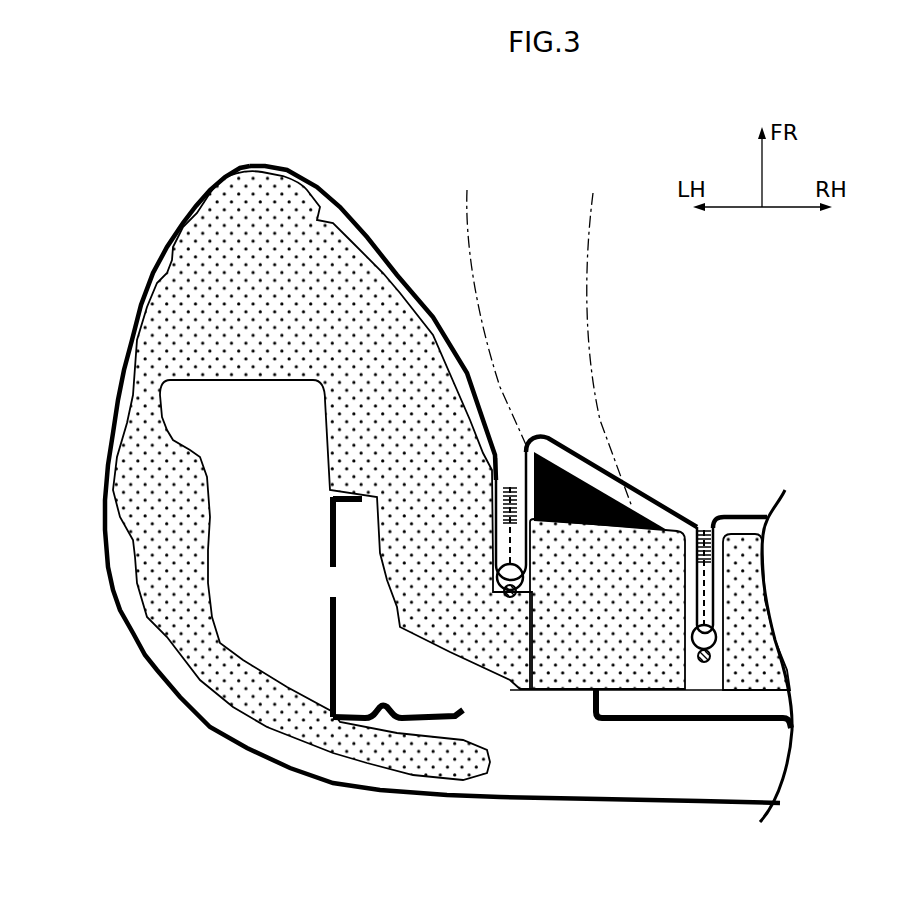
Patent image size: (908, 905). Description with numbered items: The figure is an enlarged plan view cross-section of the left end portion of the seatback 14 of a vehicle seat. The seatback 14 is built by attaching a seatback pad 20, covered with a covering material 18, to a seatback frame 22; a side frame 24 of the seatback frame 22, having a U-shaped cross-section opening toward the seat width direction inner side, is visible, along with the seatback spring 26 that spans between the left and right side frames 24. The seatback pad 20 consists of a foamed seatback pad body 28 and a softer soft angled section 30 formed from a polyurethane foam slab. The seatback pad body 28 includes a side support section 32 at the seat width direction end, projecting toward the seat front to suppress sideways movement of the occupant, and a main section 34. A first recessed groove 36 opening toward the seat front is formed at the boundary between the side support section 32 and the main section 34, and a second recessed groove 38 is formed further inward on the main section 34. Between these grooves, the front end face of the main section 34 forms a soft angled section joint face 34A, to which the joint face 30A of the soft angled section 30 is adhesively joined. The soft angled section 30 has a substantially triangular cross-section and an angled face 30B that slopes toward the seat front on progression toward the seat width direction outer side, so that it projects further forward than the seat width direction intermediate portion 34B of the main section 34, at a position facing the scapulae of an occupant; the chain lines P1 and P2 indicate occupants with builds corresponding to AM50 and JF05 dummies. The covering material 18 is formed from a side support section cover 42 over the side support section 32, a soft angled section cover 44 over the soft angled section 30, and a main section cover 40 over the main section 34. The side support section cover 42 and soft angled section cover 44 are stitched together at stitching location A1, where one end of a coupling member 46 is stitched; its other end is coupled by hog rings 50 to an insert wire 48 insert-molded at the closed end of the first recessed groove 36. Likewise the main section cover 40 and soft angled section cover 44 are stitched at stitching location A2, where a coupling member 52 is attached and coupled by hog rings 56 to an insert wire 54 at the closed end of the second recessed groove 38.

The seatback 14 is at (113, 197).
The side support section 32 is at (203, 212).
The side support section cover 42 is at (240, 163).
The covering material 18 is at (472, 442).
The soft angled section cover 44 is at (673, 500).
The main section cover 40 is at (727, 516).
The first recessed groove 36 is at (524, 538).
The soft angled section 30 is at (568, 458).
The joint face 30A is at (633, 532).
The angled face 30B is at (612, 512).
The occupant P1 is at (465, 212).
The occupant P2 is at (589, 220).
The stitching location A1 is at (502, 503).
The coupling member 46 is at (510, 533).
The hog ring 50 is at (500, 560).
The insert wire 48 is at (504, 592).
The stitching location A2 is at (610, 530).
The coupling member 52 is at (672, 558).
The hog ring 56 is at (708, 626).
The insert wire 54 is at (708, 655).
The main section 34 is at (736, 655).
The seat width direction intermediate portion 34B is at (747, 533).
The soft angled section joint face 34A is at (593, 533).
The seatback spring 26 is at (740, 722).
The second recessed groove 38 is at (688, 602).
The seatback frame 22 is at (308, 655).
The side frame 24 is at (327, 673).
The seatback pad body 28 is at (505, 700).
The seatback pad 20 is at (574, 712).